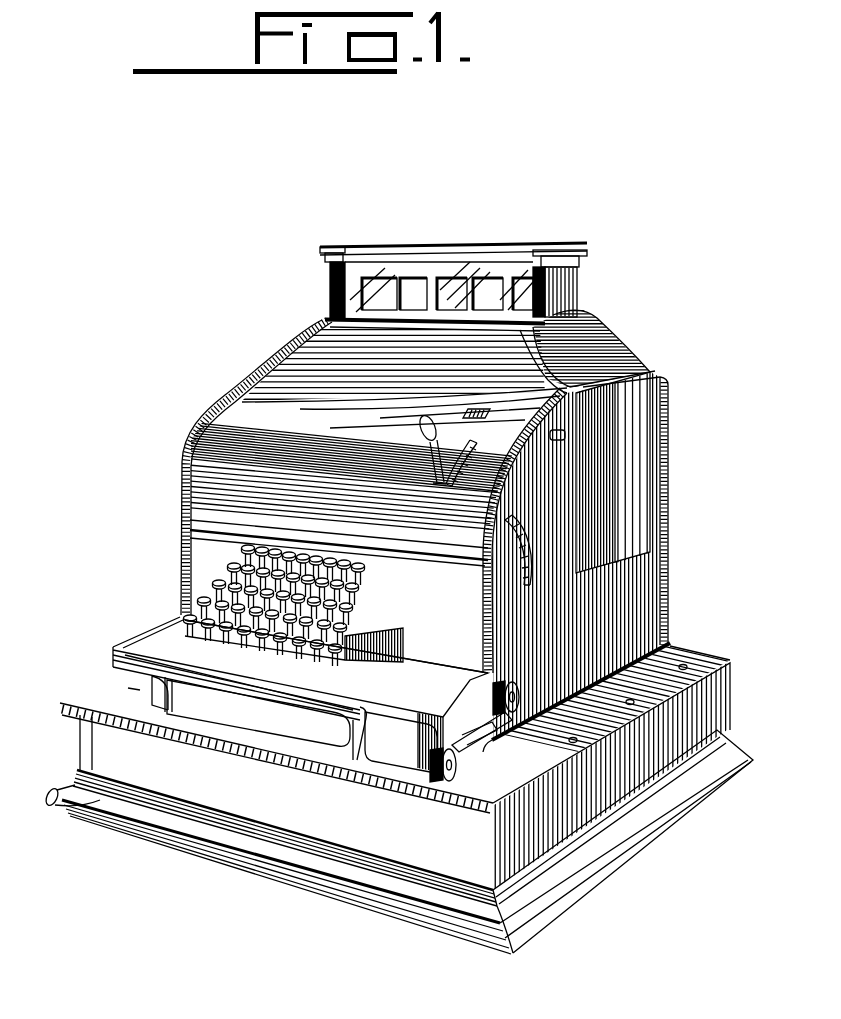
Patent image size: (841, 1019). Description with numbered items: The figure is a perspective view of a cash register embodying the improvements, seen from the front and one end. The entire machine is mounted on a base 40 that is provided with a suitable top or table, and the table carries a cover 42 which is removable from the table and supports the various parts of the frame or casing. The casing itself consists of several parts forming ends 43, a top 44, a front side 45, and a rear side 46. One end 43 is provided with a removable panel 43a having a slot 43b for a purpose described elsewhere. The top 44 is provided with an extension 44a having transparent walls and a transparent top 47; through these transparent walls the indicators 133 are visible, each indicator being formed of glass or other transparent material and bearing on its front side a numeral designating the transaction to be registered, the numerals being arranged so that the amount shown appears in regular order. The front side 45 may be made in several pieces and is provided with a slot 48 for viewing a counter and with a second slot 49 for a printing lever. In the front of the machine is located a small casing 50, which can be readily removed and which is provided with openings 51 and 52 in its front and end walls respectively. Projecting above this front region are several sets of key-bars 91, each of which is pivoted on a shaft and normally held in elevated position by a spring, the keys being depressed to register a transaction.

The base 40 is at (97, 749).
The cover 42 is at (680, 653).
The end 43 is at (643, 502).
The removable panel 43a is at (600, 450).
The slot 43b is at (537, 527).
The top 44 is at (607, 353).
The extension 44a is at (580, 282).
The front side 45 is at (183, 464).
The rear side 46 is at (667, 468).
The transparent top 47 is at (448, 250).
The slot 48 is at (463, 409).
The second slot 49 is at (453, 440).
The small casing 50 is at (407, 667).
The opening 51 is at (345, 740).
The opening 52 is at (450, 697).
The key-bars 91 is at (364, 597).
The indicator 133 is at (413, 280).